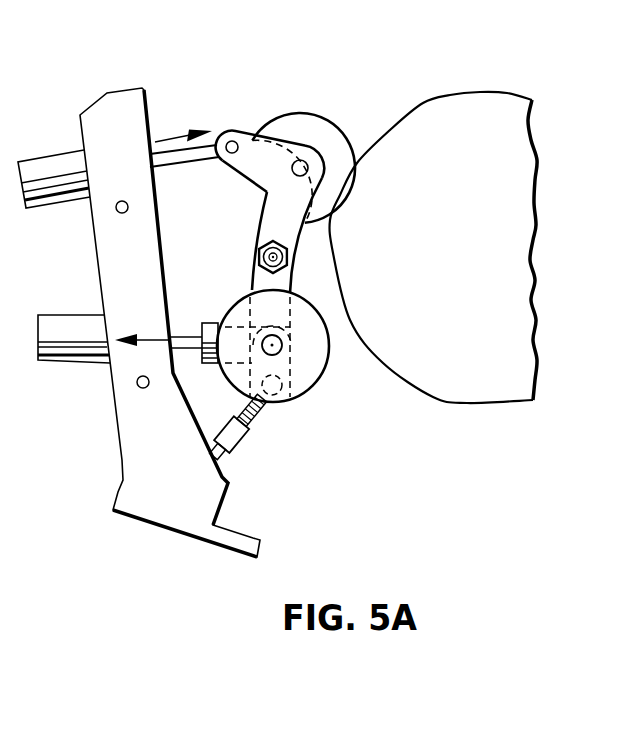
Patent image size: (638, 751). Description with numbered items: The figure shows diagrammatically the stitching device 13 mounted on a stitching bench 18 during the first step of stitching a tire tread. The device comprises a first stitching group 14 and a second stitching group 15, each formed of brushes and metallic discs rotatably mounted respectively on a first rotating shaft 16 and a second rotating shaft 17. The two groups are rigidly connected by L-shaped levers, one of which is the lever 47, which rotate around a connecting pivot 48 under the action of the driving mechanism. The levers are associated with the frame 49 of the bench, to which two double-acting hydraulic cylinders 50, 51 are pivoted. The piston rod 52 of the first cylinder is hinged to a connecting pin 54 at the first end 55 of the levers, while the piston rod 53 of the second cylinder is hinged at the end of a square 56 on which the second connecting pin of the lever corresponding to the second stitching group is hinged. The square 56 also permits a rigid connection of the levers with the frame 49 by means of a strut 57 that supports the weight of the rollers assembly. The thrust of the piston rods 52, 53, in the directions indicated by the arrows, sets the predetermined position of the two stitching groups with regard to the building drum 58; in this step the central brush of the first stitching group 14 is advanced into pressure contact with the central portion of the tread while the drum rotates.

The device 13 is at (328, 102).
The first stitching group 14 is at (311, 101).
The second stitching group 15 is at (336, 379).
The first rotating shaft 16 is at (306, 162).
The second rotating shaft 17 is at (276, 352).
The stitching bench 18 is at (112, 76).
The L-shaped lever 47 is at (253, 223).
The connecting pivot 48 is at (289, 257).
The frame 49 is at (107, 260).
The double-acting hydraulic cylinder 50 is at (70, 162).
The double-acting hydraulic cylinder 51 is at (82, 355).
The piston rod 52 is at (163, 170).
The piston rod 53 is at (182, 337).
The connecting pin 54 is at (230, 140).
The first end 55 is at (272, 150).
The square 56 is at (212, 323).
The strut 57 is at (258, 423).
The building drum 58 is at (455, 120).